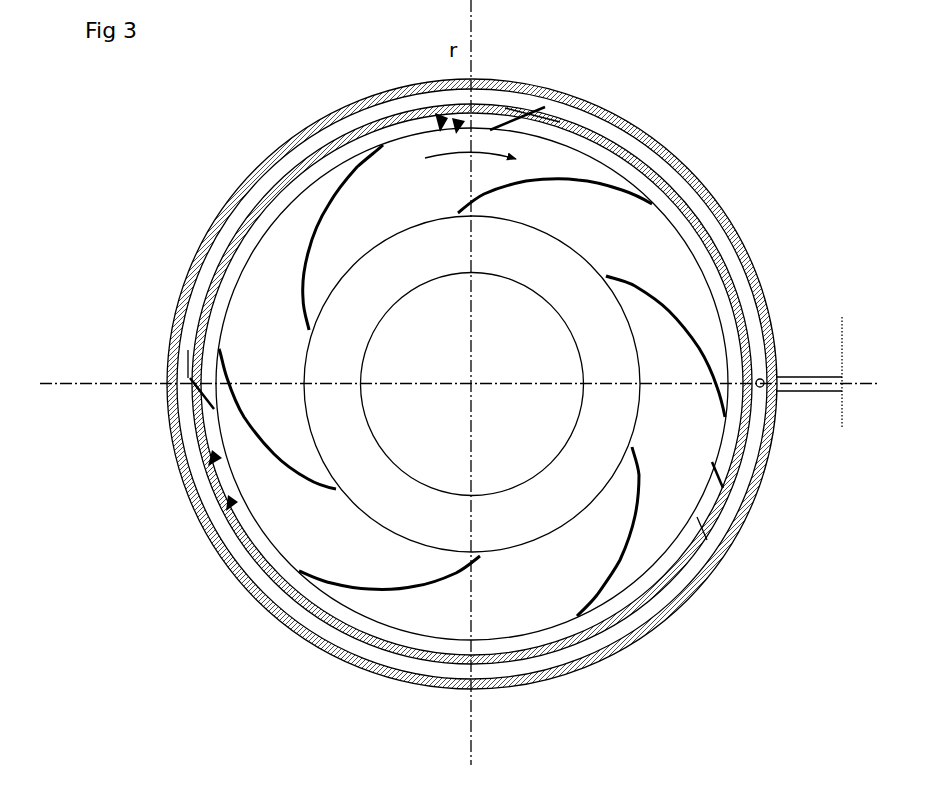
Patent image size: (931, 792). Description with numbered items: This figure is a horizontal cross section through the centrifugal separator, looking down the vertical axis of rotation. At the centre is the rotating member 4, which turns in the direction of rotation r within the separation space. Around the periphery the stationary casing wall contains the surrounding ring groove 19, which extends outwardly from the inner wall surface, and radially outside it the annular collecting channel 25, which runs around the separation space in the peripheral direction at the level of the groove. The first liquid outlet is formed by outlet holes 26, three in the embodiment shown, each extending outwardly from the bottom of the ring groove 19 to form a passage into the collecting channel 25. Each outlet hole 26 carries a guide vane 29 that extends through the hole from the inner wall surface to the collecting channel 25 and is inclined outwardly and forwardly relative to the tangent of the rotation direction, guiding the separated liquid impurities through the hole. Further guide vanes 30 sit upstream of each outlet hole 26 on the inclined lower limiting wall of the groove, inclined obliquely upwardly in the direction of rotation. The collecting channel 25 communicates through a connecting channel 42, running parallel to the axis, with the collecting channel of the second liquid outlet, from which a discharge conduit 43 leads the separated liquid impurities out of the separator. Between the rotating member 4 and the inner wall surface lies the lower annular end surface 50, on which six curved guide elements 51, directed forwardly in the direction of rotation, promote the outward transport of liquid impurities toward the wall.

The rotating member 4 is at (303, 347).
The ring groove 19 is at (265, 223).
The annular collecting channel 25 is at (355, 127).
The outlet hole 26 is at (505, 120).
The guide vane 29 is at (548, 112).
The guide vanes 30 is at (455, 122).
The connecting channel 42 is at (766, 379).
The discharge conduit 43 is at (817, 392).
The lower annular end surface 50 is at (500, 608).
The guide elements 51 is at (332, 197).